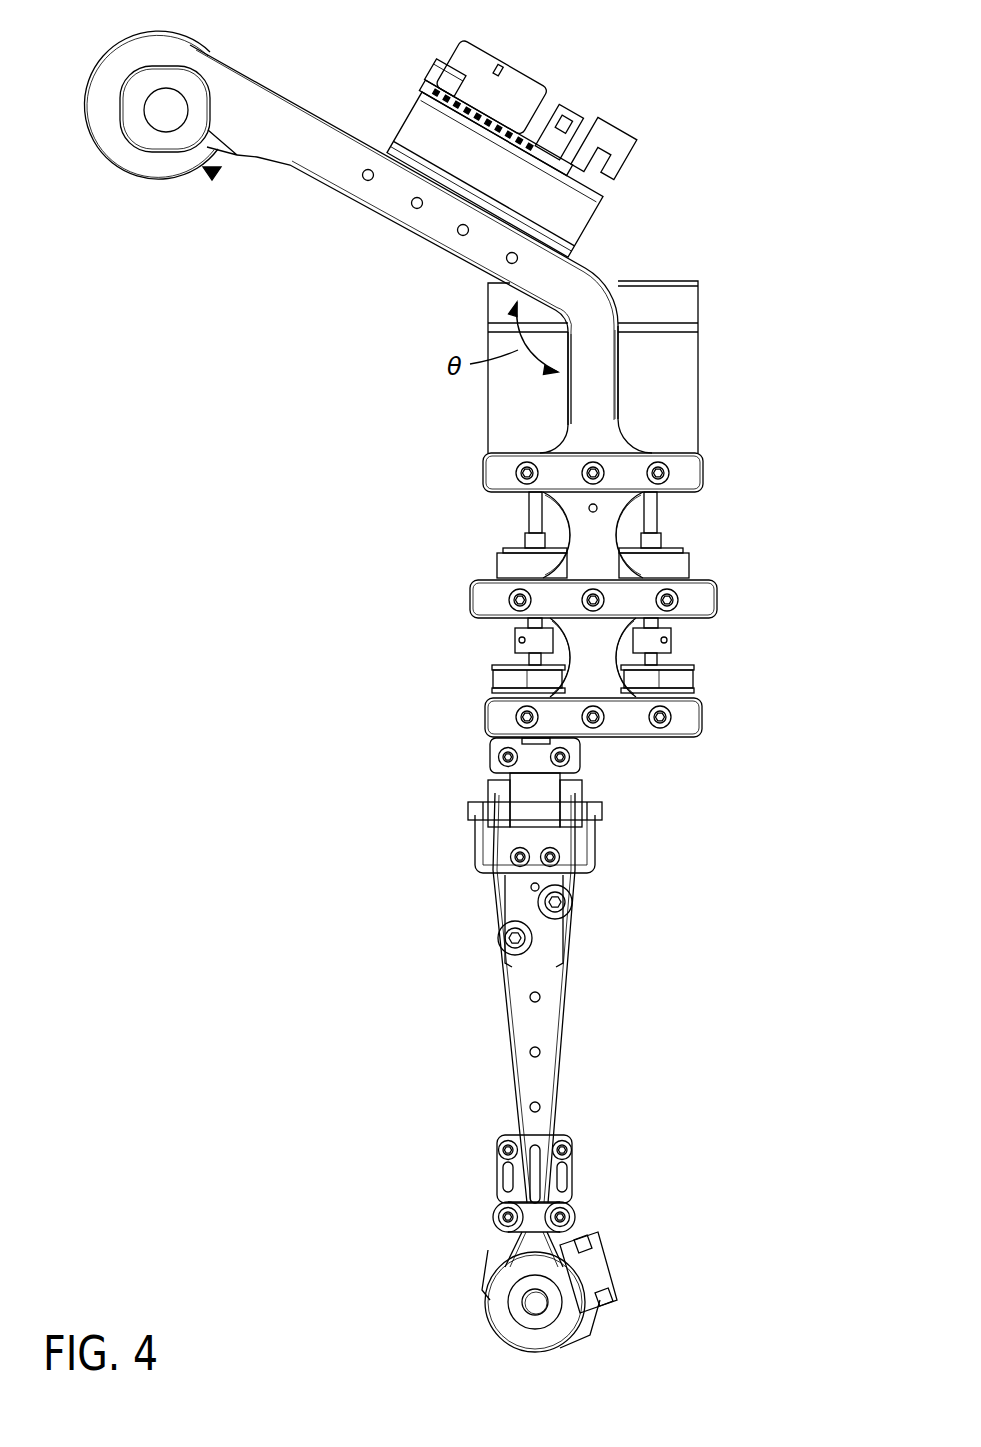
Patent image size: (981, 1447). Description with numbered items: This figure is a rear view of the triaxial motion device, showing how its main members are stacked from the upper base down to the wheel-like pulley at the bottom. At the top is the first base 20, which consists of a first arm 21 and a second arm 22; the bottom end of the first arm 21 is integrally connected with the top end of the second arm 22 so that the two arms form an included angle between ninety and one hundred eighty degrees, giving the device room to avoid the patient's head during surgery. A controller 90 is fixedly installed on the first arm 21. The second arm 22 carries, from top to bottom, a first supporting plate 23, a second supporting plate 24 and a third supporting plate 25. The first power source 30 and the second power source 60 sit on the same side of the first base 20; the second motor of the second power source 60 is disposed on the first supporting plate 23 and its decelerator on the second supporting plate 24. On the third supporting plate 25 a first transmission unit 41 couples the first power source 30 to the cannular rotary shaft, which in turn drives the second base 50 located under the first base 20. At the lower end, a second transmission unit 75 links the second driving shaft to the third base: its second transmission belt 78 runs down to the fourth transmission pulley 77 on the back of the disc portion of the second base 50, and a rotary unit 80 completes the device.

The first base 20 is at (255, 66).
The first arm 21 is at (313, 137).
The controller 90 is at (585, 84).
The second arm 22 is at (600, 365).
The second power source 60 is at (466, 303).
The first power source 30 is at (719, 302).
The first supporting plate 23 is at (688, 472).
The second supporting plate 24 is at (697, 600).
The first transmission unit 41 is at (474, 670).
The third supporting plate 25 is at (685, 715).
The second transmission belt 78 is at (492, 898).
The second base 50 is at (580, 1103).
The second transmission unit 75 is at (466, 1264).
The fourth transmission pulley 77 is at (518, 1335).
The rotary unit 80 is at (615, 1258).